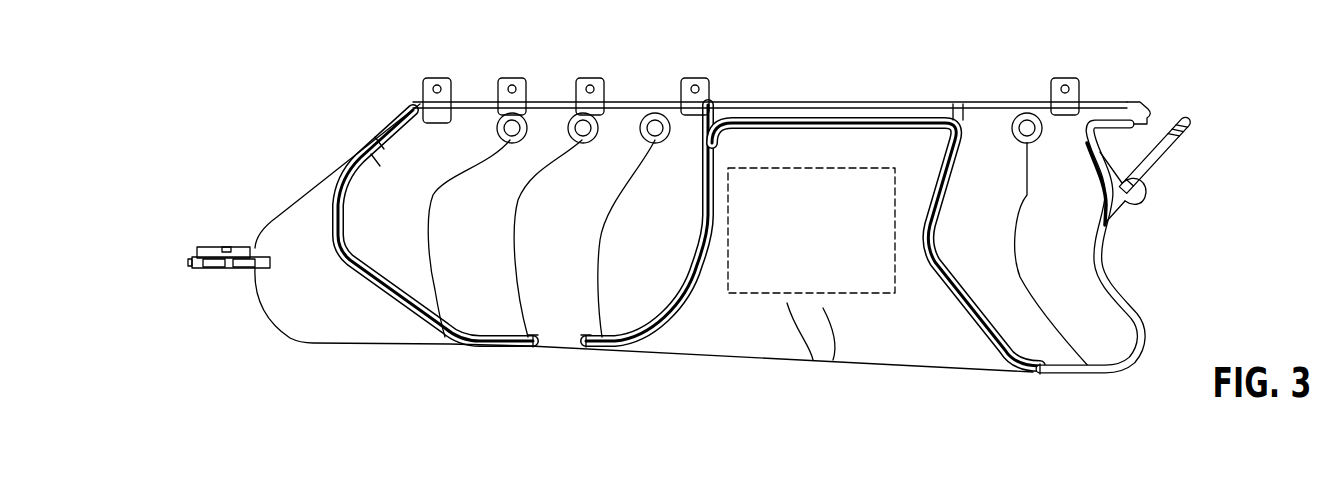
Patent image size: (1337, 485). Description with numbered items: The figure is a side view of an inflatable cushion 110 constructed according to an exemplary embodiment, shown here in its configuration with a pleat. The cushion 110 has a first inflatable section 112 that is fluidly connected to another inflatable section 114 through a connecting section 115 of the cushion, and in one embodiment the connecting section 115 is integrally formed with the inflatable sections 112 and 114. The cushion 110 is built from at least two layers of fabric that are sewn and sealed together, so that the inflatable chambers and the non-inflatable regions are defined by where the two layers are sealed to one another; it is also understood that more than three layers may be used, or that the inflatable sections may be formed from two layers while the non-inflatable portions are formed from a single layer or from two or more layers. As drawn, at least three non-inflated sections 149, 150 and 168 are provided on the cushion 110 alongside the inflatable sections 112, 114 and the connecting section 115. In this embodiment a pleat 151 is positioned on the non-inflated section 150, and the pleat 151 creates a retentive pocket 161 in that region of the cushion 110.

The inflatable cushion 110 is at (1100, 70).
The first inflatable section 112 is at (557, 310).
The inflatable section 114 is at (1090, 327).
The connecting section 115 is at (818, 115).
The non-inflated section 149 is at (333, 303).
The non-inflated section 150 is at (908, 318).
The pleat 151 is at (822, 333).
The retentive pocket 161 is at (860, 168).
The non-inflated section 168 is at (1125, 200).